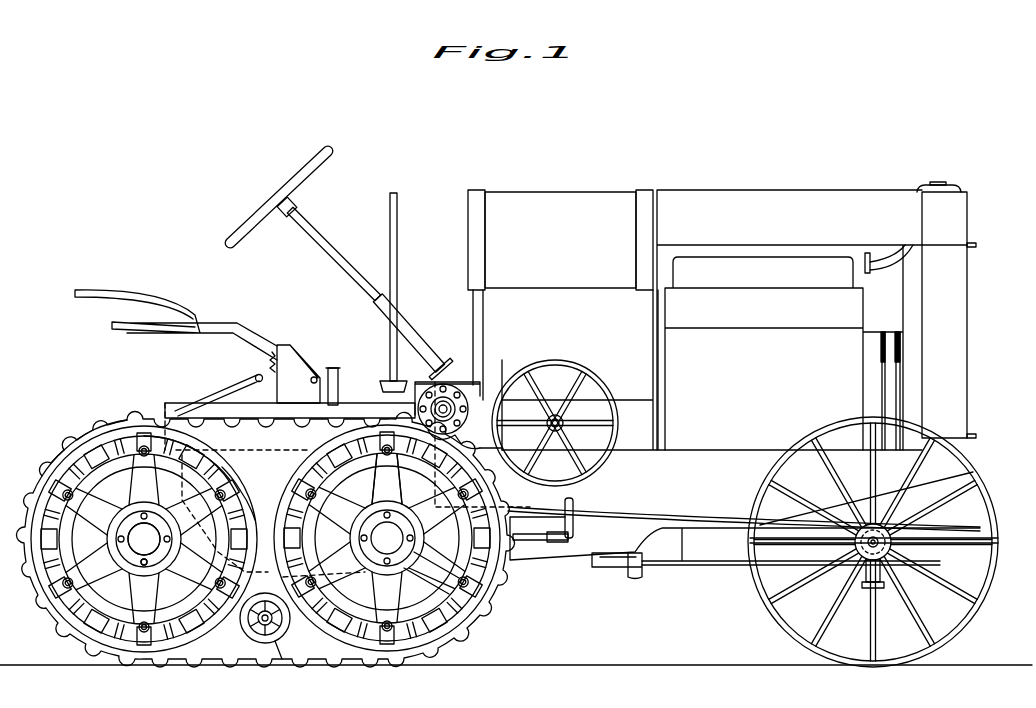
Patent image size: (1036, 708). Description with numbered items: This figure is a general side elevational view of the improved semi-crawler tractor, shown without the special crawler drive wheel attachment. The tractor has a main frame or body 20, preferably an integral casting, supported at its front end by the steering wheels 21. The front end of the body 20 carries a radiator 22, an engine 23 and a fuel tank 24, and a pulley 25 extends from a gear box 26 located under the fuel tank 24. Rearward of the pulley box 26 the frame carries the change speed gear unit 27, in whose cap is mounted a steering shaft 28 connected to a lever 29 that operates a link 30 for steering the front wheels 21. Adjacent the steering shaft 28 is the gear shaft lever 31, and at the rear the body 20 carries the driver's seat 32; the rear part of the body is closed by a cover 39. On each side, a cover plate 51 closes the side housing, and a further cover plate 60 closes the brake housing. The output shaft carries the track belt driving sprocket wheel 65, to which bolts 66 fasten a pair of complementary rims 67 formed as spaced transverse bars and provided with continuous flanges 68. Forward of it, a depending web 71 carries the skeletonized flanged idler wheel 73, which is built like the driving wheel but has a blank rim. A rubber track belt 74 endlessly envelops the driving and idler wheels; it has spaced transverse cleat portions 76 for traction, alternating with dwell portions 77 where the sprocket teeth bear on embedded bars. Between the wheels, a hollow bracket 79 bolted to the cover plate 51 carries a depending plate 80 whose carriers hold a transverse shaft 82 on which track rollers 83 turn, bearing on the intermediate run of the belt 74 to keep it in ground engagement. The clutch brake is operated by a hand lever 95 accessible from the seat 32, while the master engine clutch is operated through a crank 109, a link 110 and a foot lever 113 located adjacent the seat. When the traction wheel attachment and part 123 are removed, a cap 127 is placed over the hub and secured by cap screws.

The main frame 20 is at (640, 535).
The steering wheels 21 is at (982, 490).
The radiator 22 is at (968, 272).
The engine 23 is at (748, 260).
The fuel tank 24 is at (572, 196).
The pulley 25 is at (562, 362).
The gear box 26 is at (638, 405).
The change speed gear unit 27 is at (466, 400).
The steering shaft 28 is at (304, 216).
The lever 29 is at (488, 398).
The link 30 is at (710, 518).
The gear shaft lever 31 is at (398, 226).
The driver's seat 32 is at (180, 305).
The cover 39 is at (178, 396).
The cover plates 51 is at (402, 574).
The cover plate 60 is at (38, 497).
The track belt driving sprocket wheel 65 is at (204, 452).
The bolts 66 is at (233, 480).
The rims 67 is at (240, 492).
The flanges 68 is at (50, 477).
The depending web 71 is at (408, 462).
The idler wheel 73 is at (492, 610).
The rubber track belt 74 is at (158, 408).
The cleat portions 76 is at (104, 419).
The dwell portions 77 is at (74, 443).
The hollow bracket 79 is at (258, 512).
The depending plate 80 is at (282, 545).
The transverse shaft 82 is at (246, 628).
The track rollers 83 is at (284, 648).
The hand lever 95 is at (267, 378).
The crank 109 is at (575, 504).
The link 110 is at (530, 541).
The foot lever 113 is at (338, 366).
The removable part 123 is at (150, 526).
The cap 127 is at (144, 566).